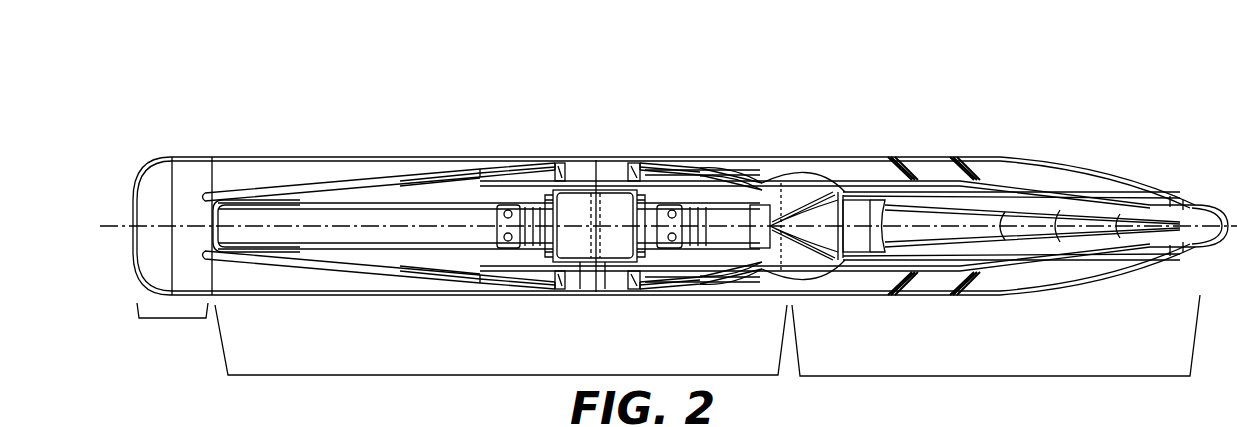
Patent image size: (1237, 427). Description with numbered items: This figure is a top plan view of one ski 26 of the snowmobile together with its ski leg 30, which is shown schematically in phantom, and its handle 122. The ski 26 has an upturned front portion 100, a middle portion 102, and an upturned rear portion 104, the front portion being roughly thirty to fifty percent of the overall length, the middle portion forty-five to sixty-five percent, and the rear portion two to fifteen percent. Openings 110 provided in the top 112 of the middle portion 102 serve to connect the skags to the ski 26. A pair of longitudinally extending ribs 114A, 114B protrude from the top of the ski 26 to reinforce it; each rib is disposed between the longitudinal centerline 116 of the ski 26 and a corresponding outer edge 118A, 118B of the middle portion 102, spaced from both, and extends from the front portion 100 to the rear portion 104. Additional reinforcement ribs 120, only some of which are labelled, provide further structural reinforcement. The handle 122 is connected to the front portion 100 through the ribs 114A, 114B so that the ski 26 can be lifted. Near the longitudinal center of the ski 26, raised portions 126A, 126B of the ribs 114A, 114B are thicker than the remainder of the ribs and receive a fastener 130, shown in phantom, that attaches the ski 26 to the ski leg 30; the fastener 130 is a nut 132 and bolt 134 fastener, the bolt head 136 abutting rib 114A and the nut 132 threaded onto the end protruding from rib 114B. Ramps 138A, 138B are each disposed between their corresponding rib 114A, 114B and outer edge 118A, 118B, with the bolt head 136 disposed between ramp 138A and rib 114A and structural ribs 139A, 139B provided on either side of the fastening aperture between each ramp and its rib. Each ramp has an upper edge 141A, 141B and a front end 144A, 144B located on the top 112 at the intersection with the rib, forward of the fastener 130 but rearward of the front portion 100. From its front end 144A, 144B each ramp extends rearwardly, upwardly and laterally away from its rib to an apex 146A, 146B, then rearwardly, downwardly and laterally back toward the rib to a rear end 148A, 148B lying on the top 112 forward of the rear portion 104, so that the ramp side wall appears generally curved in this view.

The ski 26 is at (506, 44).
The ski leg 30 is at (588, 268).
The upturned front portion 100 is at (1017, 378).
The middle portion 102 is at (485, 378).
The upturned rear portion 104 is at (175, 320).
The openings 110 is at (498, 205).
The top 112 is at (393, 140).
The rib 114A is at (856, 300).
The rib 114B is at (822, 158).
The longitudinal centerline 116 is at (275, 215).
The outer edge 118A is at (375, 300).
The outer edge 118B is at (345, 150).
The reinforcement ribs 120 is at (896, 157).
The handle 122 is at (1140, 222).
The raised portion 126A is at (670, 290).
The raised portion 126B is at (652, 155).
The fastener 130 is at (582, 208).
The nut 132 is at (596, 150).
The bolt 134 is at (633, 155).
The bolt head 136 is at (614, 290).
The ramp 138A is at (565, 292).
The ramp 138B is at (702, 158).
The structural ribs 139A is at (525, 290).
The structural ribs 139B is at (542, 156).
The upper edge 141A is at (756, 284).
The upper edge 141B is at (746, 156).
The front end 144A is at (790, 298).
The front end 144B is at (801, 158).
The apex 146A is at (597, 290).
The apex 146B is at (620, 158).
The rear end 148A is at (448, 288).
The rear end 148B is at (450, 168).